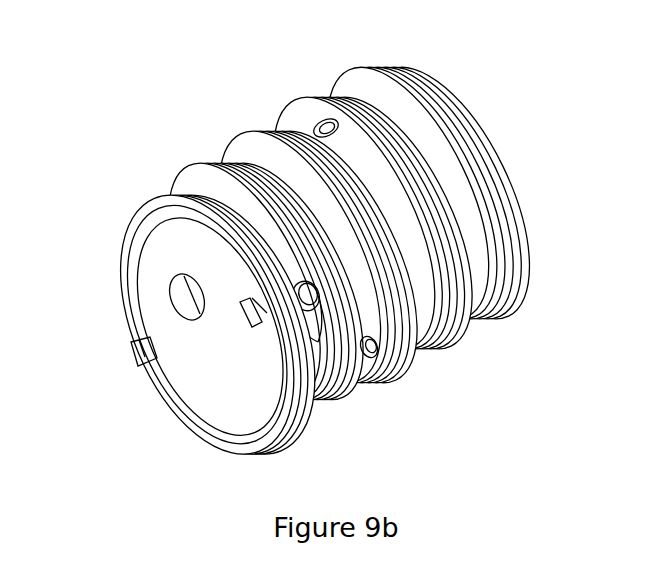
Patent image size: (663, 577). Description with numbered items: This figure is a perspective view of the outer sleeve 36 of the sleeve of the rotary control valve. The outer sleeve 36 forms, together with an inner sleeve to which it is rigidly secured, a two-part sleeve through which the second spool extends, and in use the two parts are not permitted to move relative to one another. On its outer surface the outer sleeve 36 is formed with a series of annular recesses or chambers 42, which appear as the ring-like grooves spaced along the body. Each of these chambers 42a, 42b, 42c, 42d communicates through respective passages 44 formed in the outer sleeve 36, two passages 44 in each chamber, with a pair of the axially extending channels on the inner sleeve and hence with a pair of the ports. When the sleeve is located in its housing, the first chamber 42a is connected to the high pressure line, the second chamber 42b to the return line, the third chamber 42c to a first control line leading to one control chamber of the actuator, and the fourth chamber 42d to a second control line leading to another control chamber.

The outer sleeve 36 is at (125, 305).
The annular recesses or chambers 42 is at (323, 233).
The first chamber 42a is at (274, 160).
The second chamber 42b is at (477, 303).
The third chamber 42c is at (240, 207).
The fourth chamber 42d is at (421, 323).
The passages 44 is at (318, 125).